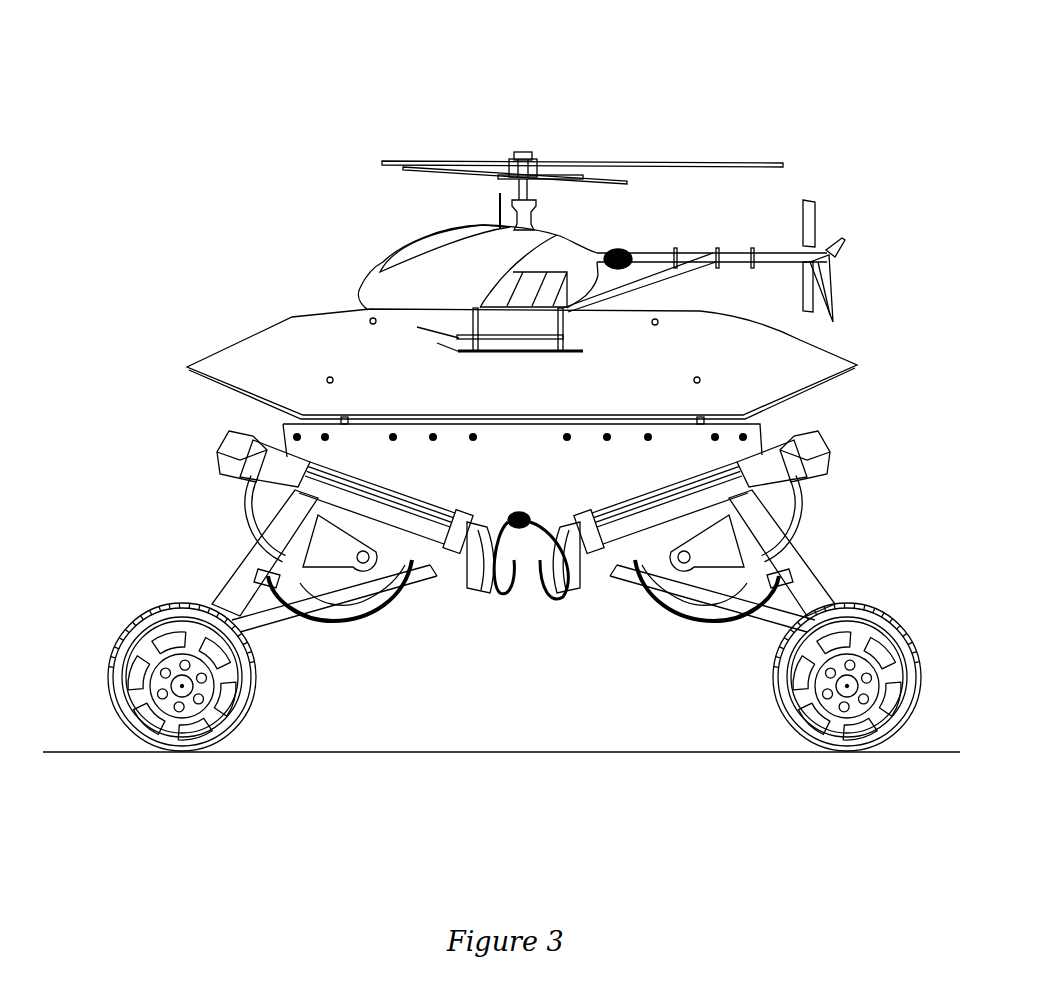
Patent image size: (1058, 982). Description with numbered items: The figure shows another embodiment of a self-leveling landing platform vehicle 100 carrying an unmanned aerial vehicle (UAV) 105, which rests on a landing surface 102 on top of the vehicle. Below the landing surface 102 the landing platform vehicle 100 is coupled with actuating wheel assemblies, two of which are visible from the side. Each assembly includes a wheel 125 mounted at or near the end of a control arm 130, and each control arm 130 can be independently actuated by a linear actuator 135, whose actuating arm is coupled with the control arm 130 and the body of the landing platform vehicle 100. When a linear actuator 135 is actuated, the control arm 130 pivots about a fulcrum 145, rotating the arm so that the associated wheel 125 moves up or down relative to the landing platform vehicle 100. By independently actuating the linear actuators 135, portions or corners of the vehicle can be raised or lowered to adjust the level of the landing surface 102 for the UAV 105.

The landing platform vehicle 100 is at (261, 252).
The landing surface 102 is at (742, 363).
The unmanned aerial vehicle (UAV) 105 is at (480, 106).
The wheel 125 is at (200, 721).
The control arm 130 is at (778, 528).
The linear actuator 135 is at (420, 592).
The fulcrum 145 is at (318, 618).